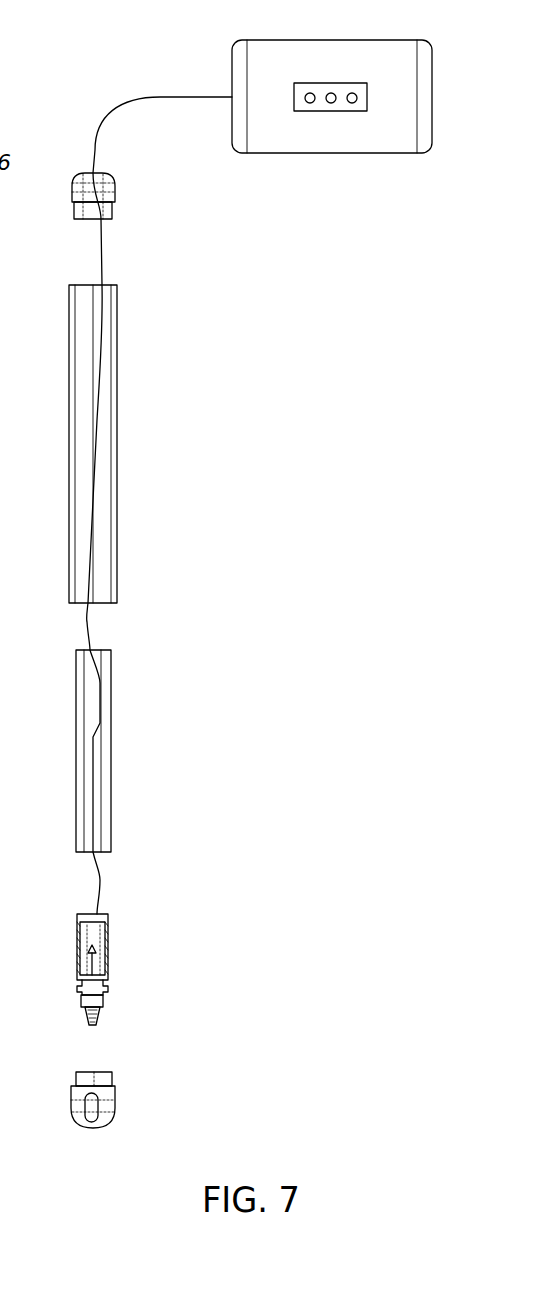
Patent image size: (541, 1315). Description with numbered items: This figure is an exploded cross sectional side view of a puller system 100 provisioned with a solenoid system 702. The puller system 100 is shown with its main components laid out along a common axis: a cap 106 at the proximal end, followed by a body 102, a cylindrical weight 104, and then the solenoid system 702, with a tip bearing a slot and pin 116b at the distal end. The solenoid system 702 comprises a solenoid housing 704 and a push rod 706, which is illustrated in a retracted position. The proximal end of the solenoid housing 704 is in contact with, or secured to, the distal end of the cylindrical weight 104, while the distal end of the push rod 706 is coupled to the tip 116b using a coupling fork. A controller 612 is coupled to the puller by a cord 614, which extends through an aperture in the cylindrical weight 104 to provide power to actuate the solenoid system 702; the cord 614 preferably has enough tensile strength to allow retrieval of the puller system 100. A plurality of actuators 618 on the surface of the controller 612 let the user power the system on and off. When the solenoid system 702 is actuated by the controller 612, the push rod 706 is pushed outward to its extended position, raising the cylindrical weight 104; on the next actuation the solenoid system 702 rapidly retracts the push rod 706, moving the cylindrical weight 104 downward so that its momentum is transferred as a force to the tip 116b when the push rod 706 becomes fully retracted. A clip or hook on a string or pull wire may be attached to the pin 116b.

The puller system 100 is at (226, 487).
The body 102 is at (117, 390).
The cylindrical weight 104 is at (111, 748).
The cap 106 is at (115, 190).
The slot and pin 116b is at (115, 1100).
The controller 612 is at (333, 153).
The cord 614 is at (153, 97).
The actuators 618 is at (333, 75).
The solenoid system 702 is at (160, 978).
The solenoid housing 704 is at (77, 948).
The push rod 706 is at (88, 1018).